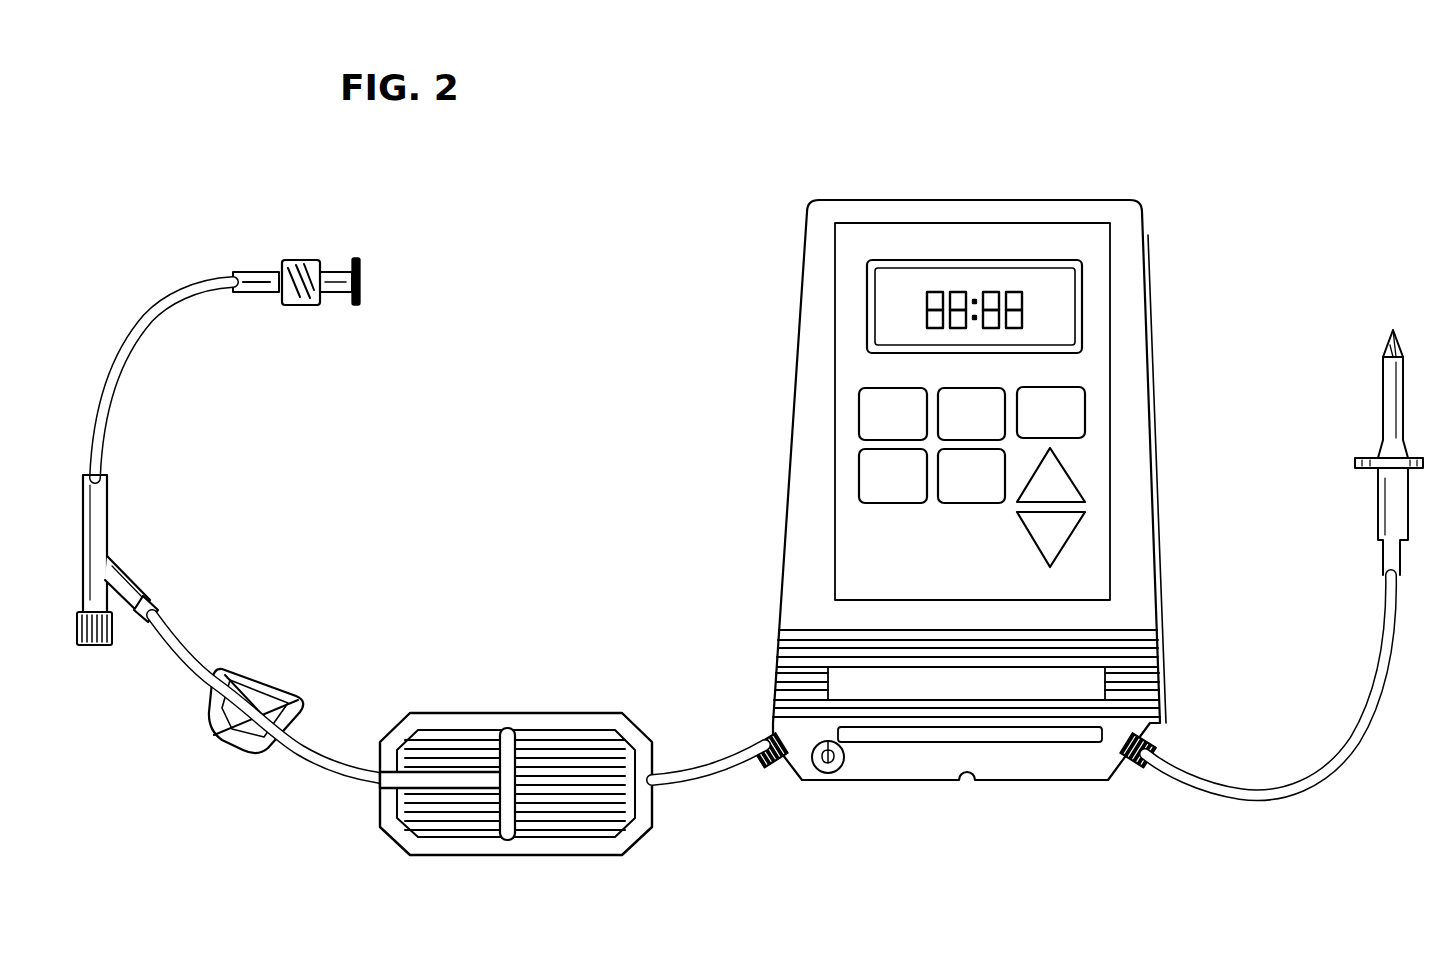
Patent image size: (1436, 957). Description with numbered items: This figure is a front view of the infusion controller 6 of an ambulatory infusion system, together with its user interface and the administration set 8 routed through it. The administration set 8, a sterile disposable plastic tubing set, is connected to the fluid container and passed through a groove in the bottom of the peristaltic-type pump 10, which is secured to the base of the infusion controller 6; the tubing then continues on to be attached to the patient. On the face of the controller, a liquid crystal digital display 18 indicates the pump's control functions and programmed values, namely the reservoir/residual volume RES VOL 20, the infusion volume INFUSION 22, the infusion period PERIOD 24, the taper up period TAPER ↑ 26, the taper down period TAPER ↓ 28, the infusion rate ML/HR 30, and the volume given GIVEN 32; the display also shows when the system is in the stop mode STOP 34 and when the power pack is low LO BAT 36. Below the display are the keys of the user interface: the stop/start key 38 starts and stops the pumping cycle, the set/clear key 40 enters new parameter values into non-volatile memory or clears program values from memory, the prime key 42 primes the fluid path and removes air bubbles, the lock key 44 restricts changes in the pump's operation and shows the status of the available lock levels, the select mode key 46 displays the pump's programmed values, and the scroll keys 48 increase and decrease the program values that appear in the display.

The infusion controller 6 is at (1165, 597).
The administration set 8 is at (697, 784).
The peristaltic-type pump 10 is at (770, 673).
The liquid crystal digital display 18 is at (985, 285).
The reservoir/residual volume (RES VOL) 20 is at (1075, 283).
The infusion volume (INFUSION) 22 is at (878, 282).
The infusion period (PERIOD) 24 is at (878, 325).
The taper up period (TAPER ↑) 26 is at (878, 297).
The taper down period (TAPER ↓) 28 is at (878, 311).
The infusion rate (ML/HR) 30 is at (1072, 297).
The volume given (GIVEN) 32 is at (1072, 310).
The stop mode indicator (STOP) 34 is at (1075, 323).
The low power pack indicator (LO BAT) 36 is at (1072, 336).
The stop/start key (STOP/START) 38 is at (862, 410).
The set/clear key (SET/CLEAR) 40 is at (945, 390).
The prime key (PRIME) 42 is at (1083, 405).
The lock key (LOCK) 44 is at (865, 493).
The select mode key (SELECT MODE) 46 is at (943, 505).
The scroll keys 48 is at (1068, 525).